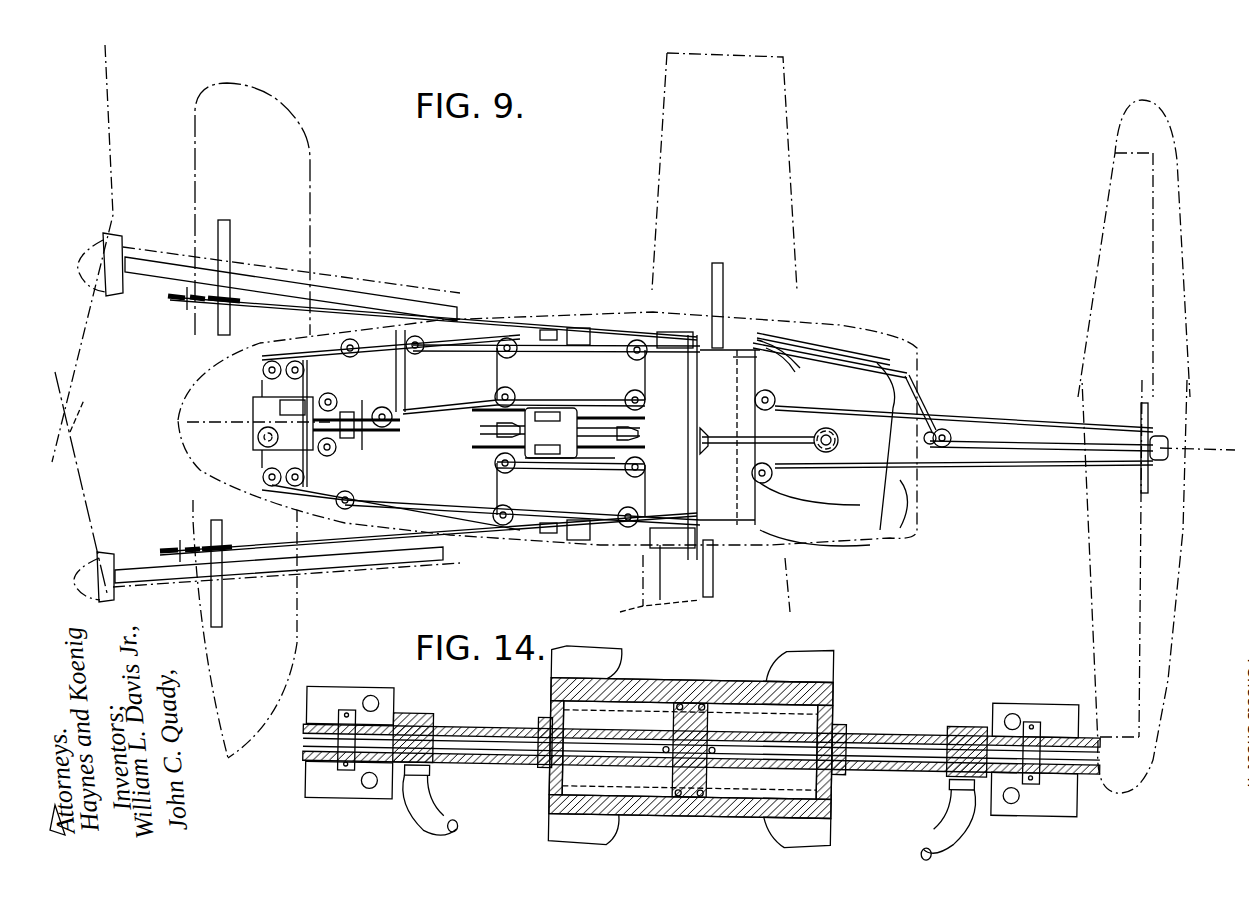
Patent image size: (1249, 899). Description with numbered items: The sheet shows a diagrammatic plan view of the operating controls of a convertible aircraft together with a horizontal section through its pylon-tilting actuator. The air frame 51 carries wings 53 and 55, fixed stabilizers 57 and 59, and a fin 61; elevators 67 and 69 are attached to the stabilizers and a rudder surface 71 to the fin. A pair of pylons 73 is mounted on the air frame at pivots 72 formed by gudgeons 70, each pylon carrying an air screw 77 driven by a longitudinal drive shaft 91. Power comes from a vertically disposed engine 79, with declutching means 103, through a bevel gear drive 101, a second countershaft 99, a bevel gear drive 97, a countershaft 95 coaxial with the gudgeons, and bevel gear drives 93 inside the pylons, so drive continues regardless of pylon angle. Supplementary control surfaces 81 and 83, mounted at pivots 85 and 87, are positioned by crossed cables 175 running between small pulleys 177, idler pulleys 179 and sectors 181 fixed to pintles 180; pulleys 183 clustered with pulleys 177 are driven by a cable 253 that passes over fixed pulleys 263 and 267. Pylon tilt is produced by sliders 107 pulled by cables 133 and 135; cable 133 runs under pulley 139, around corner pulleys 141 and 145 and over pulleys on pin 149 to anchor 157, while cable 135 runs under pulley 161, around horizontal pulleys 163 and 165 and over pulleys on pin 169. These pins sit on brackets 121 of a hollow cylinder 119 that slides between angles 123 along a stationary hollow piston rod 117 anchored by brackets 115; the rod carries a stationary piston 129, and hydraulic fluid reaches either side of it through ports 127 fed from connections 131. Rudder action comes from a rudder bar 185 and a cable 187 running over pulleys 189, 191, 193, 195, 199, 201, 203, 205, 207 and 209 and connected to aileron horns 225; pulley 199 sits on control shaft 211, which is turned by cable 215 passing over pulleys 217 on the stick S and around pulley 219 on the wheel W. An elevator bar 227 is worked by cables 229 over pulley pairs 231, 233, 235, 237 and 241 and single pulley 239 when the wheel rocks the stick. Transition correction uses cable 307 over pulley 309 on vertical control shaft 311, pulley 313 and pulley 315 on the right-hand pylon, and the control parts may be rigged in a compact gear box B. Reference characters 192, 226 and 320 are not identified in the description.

In FIG. 9, the air frame 51 is at (900, 340).
In FIG. 9, the wing 53 is at (695, 586).
In FIG. 9, the wing 55 is at (660, 152).
In FIG. 9, the fixed stabilizer 57 is at (1085, 600).
In FIG. 9, the fixed stabilizer 59 is at (1098, 246).
In FIG. 9, the fin 61 is at (1072, 466).
In FIG. 9, the elevator 67 is at (1160, 705).
In FIG. 9, the elevator 69 is at (1172, 168).
In FIG. 9, the gudgeons 70 is at (679, 459).
In FIG. 9, the rudder surface 71 is at (1205, 452).
In FIG. 9, the pylon pivot 72 is at (695, 300).
In FIG. 9, the pylons 73 is at (437, 288).
In FIG. 9, the air screw 77 is at (112, 160).
In FIG. 9, the internal combustion engine 79 is at (900, 542).
In FIG. 9, the supplementary control surface 81 is at (186, 462).
In FIG. 9, the supplementary control surface 83 is at (305, 130).
In FIG. 9, the pivot 85 is at (212, 522).
In FIG. 9, the pivot 87 is at (232, 222).
In FIG. 9, the drive shaft 91 is at (340, 282).
In FIG. 9, the bevel gear drives 93 is at (709, 442).
In FIG. 9, the countershaft 95 is at (688, 472).
In FIG. 9, the bevel gear drive 97 is at (715, 445).
In FIG. 9, the second countershaft 99 is at (758, 445).
In FIG. 9, the third bevel gear drive 101 is at (833, 445).
In FIG. 9, the declutching means 103 is at (897, 446).
In FIG. 9, the sliders 107 is at (578, 326).
In FIG. 9, the brackets 115 is at (567, 433).
In FIG. 14, the brackets 115 is at (342, 690).
In FIG. 9, the hollow piston rod 117 is at (570, 467).
In FIG. 14, the hollow piston rod 117 is at (882, 736).
In FIG. 9, the hollow cylinder 119 is at (546, 460).
In FIG. 14, the hollow cylinder 119 is at (640, 690).
In FIG. 9, the brackets 121 is at (560, 427).
In FIG. 14, the brackets 121 is at (577, 652).
In FIG. 9, the angles 123 is at (565, 431).
In FIG. 14, the ports 127 is at (662, 752).
In FIG. 14, the piston 129 is at (692, 700).
In FIG. 14, the inlets 131 is at (430, 795).
In FIG. 9, the cable 133 is at (610, 441).
In FIG. 9, the cable 135 is at (495, 372).
In FIG. 9, the pulley 139 is at (596, 328).
In FIG. 9, the corner pulley 141 is at (622, 433).
In FIG. 9, the second corner pulley 145 is at (619, 433).
In FIG. 9, the pin 149 is at (587, 363).
In FIG. 9, the anchor 157 is at (625, 438).
In FIG. 9, the pulley 161 is at (548, 328).
In FIG. 9, the horizontal pulley 163 is at (496, 512).
In FIG. 9, the horizontal pulley 165 is at (482, 466).
In FIG. 9, the pin 169 is at (530, 475).
In FIG. 9, the crossed cable 175 is at (286, 305).
In FIG. 9, the small pulley 177 is at (693, 450).
In FIG. 9, the idler pulley 179 is at (158, 423).
In FIG. 9, the pintles 180 is at (226, 304).
In FIG. 9, the sector 181 is at (197, 424).
In FIG. 9, the pulley 183 is at (670, 439).
In FIG. 9, the rudder bar 185 is at (1170, 443).
In FIG. 9, the cable 187 is at (707, 432).
In FIG. 9, the pulley 189 is at (773, 478).
In FIG. 9, the pulley 191 is at (810, 494).
In FIG. 9, the pulley 192 is at (313, 455).
In FIG. 9, the pulley 193 is at (803, 538).
In FIG. 9, the pulley 195 is at (335, 508).
In FIG. 9, the pulley 199 is at (290, 407).
In FIG. 9, the pulley 201 is at (325, 387).
In FIG. 9, the pulley 203 is at (333, 345).
In FIG. 9, the pulley 205 is at (739, 437).
In FIG. 9, the pulley 207 is at (780, 393).
In FIG. 9, the pulley 209 is at (776, 402).
In FIG. 9, the control shaft 211 is at (320, 383).
In FIG. 9, the cable 215 is at (314, 478).
In FIG. 9, the pulleys 217 is at (345, 440).
In FIG. 9, the pulley 219 is at (365, 440).
In FIG. 9, the horns 225 is at (730, 465).
In FIG. 9, the post 226 is at (725, 278).
In FIG. 9, the elevator bar 227 is at (1143, 436).
In FIG. 9, the cables 229 is at (465, 340).
In FIG. 9, the pair of pulleys 231 is at (945, 430).
In FIG. 9, the pair of pulleys 233 is at (791, 358).
In FIG. 9, the pair of pulleys 235 is at (745, 340).
In FIG. 9, the pair of pulleys 237 is at (422, 352).
In FIG. 9, the single pulley 239 is at (385, 338).
In FIG. 9, the pair of pulleys 241 is at (382, 406).
In FIG. 9, the cable 253 is at (267, 423).
In FIG. 9, the fixed pulley 263 is at (294, 423).
In FIG. 9, the fixed pulley 267 is at (262, 372).
In FIG. 9, the cable 307 is at (450, 412).
In FIG. 9, the pulley 309 is at (255, 402).
In FIG. 9, the vertical control shaft 311 is at (249, 435).
In FIG. 9, the pulley 313 is at (658, 392).
In FIG. 9, the pulley 315 is at (680, 306).
In FIG. 9, the link 320 is at (340, 455).
In FIG. 9, the gear box B is at (252, 400).
In FIG. 9, the control stick S is at (356, 404).
In FIG. 9, the control wheel W is at (409, 450).